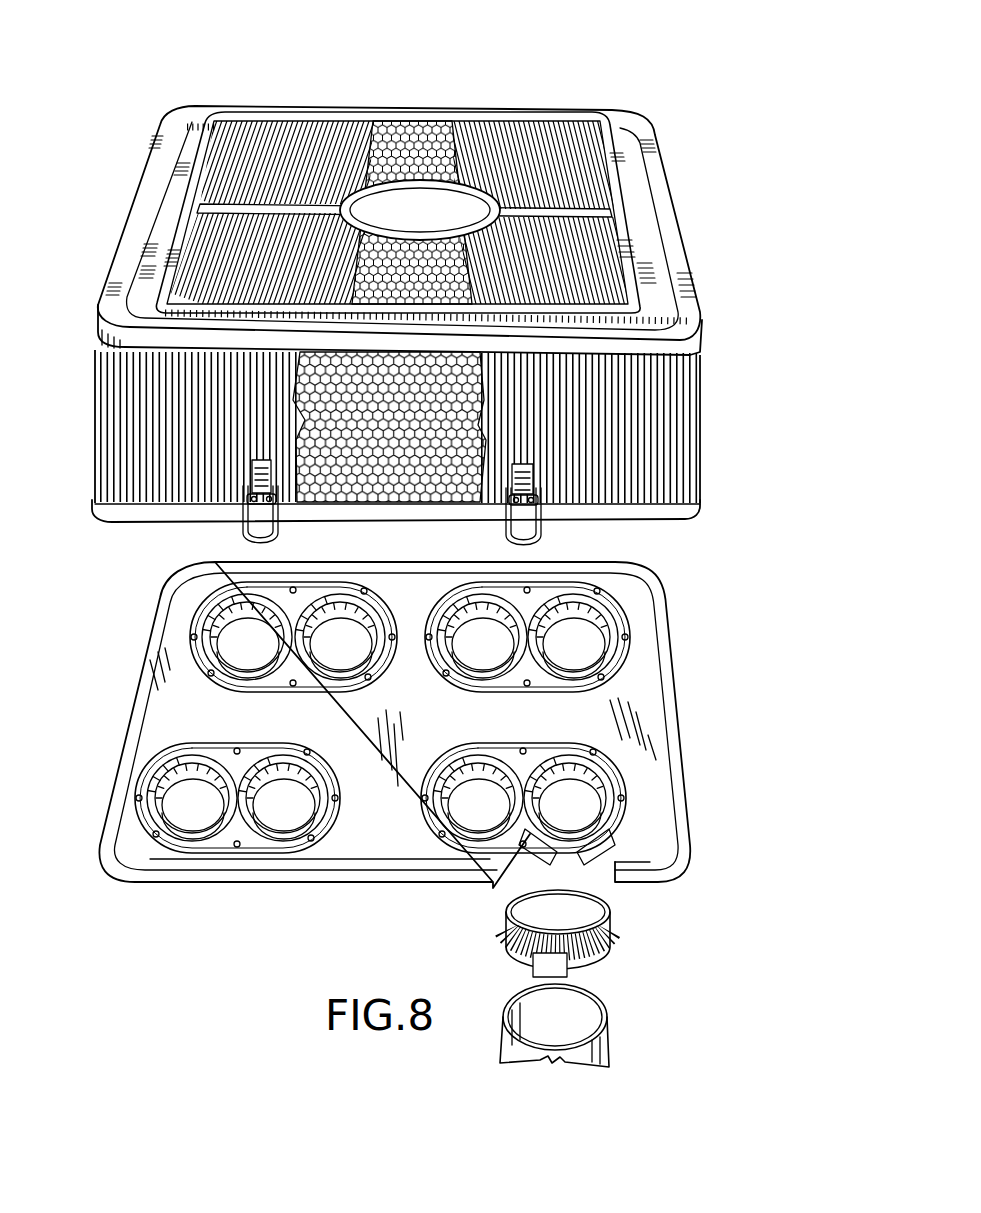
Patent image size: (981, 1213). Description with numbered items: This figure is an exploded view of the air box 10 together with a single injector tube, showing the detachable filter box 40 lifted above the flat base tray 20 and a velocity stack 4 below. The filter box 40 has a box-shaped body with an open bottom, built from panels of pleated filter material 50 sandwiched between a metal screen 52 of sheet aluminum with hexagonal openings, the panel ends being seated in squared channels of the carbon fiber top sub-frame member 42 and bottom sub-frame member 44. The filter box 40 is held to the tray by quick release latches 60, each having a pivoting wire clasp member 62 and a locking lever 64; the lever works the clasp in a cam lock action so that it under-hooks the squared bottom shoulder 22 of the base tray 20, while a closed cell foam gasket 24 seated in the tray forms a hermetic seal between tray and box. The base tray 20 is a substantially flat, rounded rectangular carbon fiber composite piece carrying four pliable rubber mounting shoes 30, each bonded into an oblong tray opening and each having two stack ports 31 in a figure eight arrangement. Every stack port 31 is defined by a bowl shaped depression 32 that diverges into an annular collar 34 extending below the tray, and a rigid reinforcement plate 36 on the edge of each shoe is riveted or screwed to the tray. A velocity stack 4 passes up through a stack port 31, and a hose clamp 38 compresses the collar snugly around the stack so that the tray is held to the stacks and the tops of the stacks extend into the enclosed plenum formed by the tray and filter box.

The air box 10 is at (686, 106).
The filter box 40 is at (272, 107).
The top sub-frame member 42 is at (446, 118).
The pleated filter material 50 is at (500, 150).
The metal screen 52 is at (404, 130).
The bottom sub-frame member 44 is at (690, 508).
The quick release latch 60 is at (262, 466).
The pivoting wire clasp member 62 is at (245, 527).
The locking lever 64 is at (262, 478).
The base tray 20 is at (113, 712).
The squared bottom shoulder 22 is at (162, 884).
The gasket 24 is at (657, 693).
The mounting shoe 30 is at (424, 744).
The stack port 31 is at (263, 672).
The bowl shaped depression 32 is at (222, 610).
The annular collar 34 is at (262, 630).
The rigid reinforcement plate 36 is at (197, 660).
The hose clamp 38 is at (608, 944).
The velocity stack 4 is at (594, 1054).